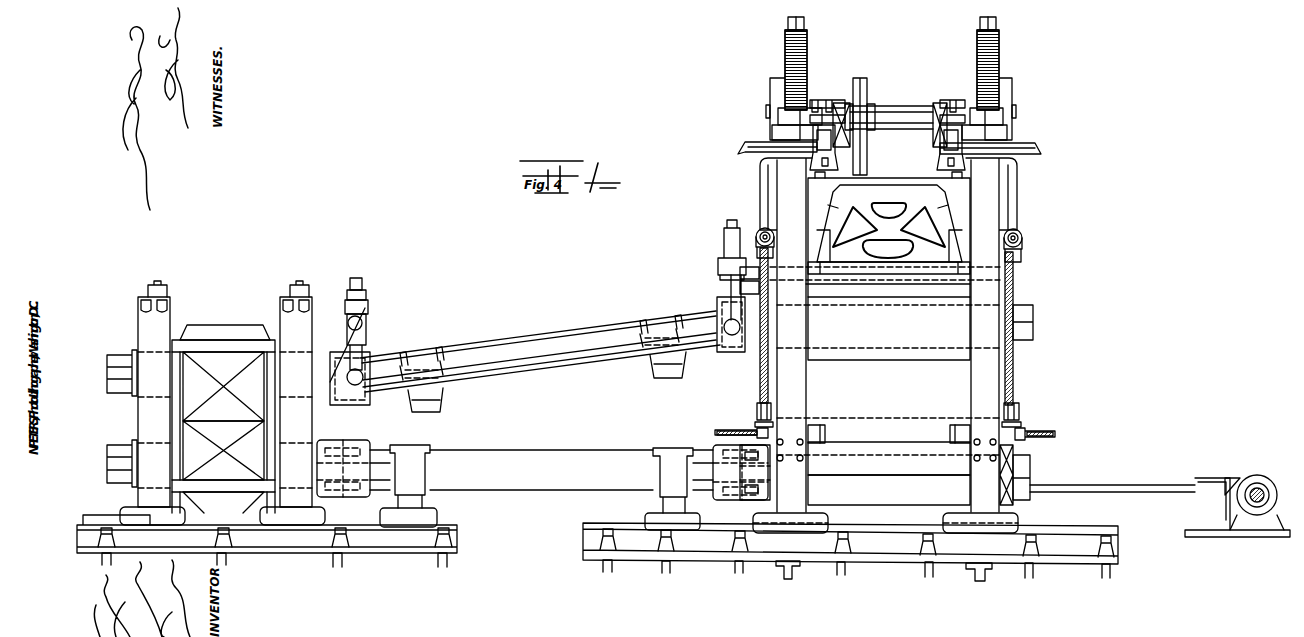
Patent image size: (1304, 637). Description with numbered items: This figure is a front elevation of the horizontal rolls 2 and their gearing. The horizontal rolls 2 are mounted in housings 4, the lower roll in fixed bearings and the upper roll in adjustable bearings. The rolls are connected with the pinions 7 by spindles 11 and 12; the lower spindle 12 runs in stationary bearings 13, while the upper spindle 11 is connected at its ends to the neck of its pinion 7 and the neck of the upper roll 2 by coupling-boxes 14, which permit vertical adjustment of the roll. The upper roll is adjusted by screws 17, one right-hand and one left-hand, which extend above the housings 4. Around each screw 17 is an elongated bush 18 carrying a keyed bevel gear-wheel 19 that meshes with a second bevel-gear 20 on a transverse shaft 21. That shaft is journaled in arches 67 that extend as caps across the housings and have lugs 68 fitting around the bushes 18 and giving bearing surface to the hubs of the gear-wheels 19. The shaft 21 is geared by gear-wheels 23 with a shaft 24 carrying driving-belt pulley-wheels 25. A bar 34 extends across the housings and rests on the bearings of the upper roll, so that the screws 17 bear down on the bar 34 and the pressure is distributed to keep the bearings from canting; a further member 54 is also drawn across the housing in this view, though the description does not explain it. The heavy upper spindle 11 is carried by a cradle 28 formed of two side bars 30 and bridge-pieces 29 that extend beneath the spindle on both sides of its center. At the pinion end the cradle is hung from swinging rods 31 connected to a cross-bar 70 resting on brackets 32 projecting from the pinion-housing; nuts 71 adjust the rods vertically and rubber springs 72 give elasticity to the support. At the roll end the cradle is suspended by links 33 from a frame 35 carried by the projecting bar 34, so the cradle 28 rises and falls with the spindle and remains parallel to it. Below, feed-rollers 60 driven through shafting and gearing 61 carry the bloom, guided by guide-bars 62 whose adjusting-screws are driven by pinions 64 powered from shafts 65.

The horizontal roll 2 is at (889, 401).
The housing 4 is at (885, 345).
The pinion 7 is at (216, 403).
The upper spindle 11 is at (518, 340).
The lower spindle 12 is at (542, 470).
The stationary bearing 13 is at (540, 487).
The coupling-box 14 is at (368, 402).
The adjusting screw 17 is at (962, 65).
The sleeve or bush 18 is at (890, 116).
The bevel gear-wheel 19 is at (1032, 161).
The bevel-gear 20 is at (935, 138).
The transverse shaft 21 is at (896, 128).
The gear-wheel 23 is at (866, 152).
The shaft 24 is at (893, 110).
The driving-belt pulley-wheel 25 is at (891, 109).
The cradle 28 is at (541, 366).
The bridge-piece 29 is at (547, 382).
The side bar 30 is at (539, 354).
The swinging link or rod 31 is at (363, 282).
The bracket 32 is at (347, 342).
The link 33 is at (745, 297).
The bar 34 is at (749, 273).
The frame 35 is at (720, 260).
The cross bar 54 is at (930, 285).
The feed-roller 60 is at (889, 458).
The intermediate shafting and gearing 61 is at (1255, 478).
The guide-bar 62 is at (942, 424).
The pinion 64 is at (1018, 418).
The shaft 65 is at (1040, 434).
The arch 67 is at (887, 147).
The lug 68 is at (889, 133).
The cross-bar 70 is at (348, 322).
The nut 71 is at (366, 295).
The rubber spring 72 is at (374, 306).